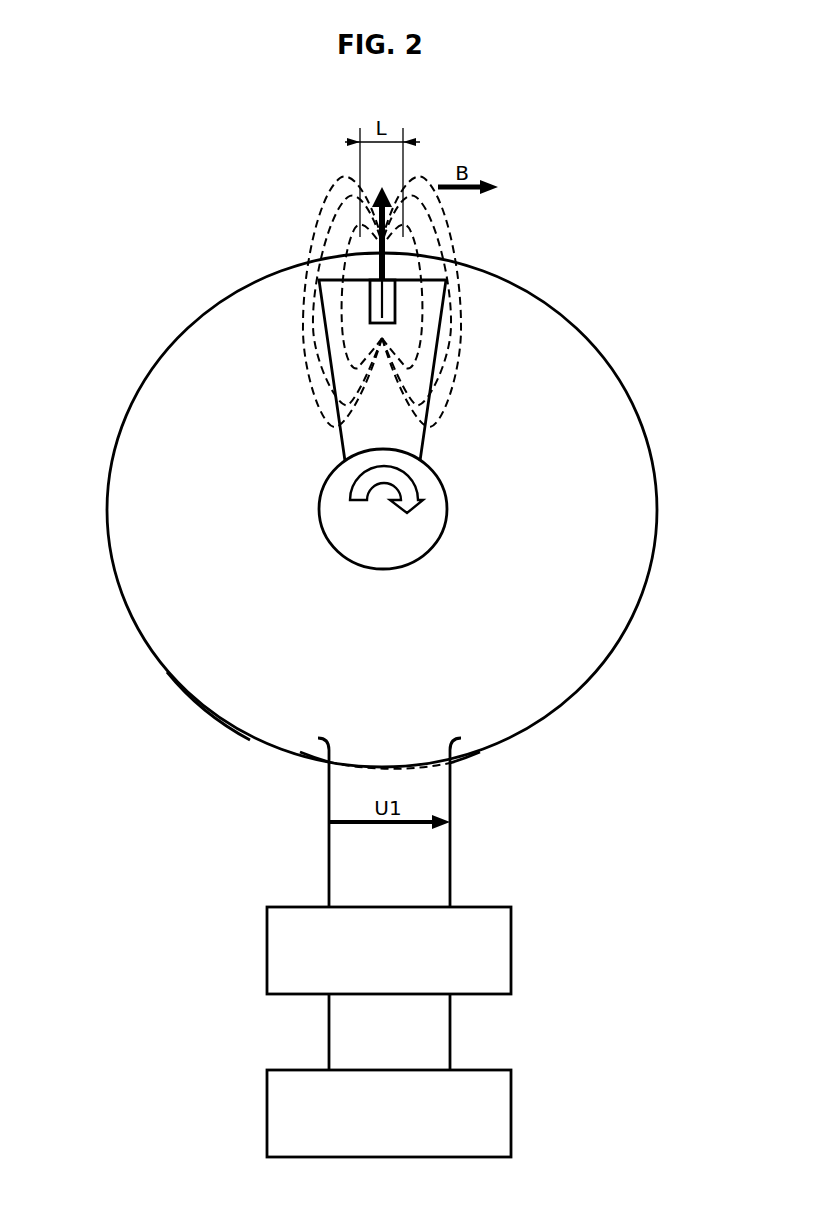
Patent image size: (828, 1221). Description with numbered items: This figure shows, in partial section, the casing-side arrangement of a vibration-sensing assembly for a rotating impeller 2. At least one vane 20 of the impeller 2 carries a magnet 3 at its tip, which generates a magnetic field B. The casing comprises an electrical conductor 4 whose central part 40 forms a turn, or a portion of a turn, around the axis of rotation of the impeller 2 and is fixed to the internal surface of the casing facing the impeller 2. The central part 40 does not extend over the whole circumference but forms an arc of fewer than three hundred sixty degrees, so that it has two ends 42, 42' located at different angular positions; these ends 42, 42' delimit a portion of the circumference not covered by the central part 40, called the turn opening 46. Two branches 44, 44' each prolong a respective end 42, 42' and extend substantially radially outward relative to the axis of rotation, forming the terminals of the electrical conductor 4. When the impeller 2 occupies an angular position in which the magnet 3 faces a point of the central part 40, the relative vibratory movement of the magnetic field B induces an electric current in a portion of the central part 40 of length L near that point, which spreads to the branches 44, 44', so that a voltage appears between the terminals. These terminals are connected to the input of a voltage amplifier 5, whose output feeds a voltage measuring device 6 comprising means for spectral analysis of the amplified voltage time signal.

The impeller 2 is at (447, 517).
The magnet 3 is at (368, 302).
The electrical conductor 4 is at (107, 509).
The voltage amplifier 5 is at (389, 950).
The voltage measuring device 6 is at (389, 1075).
The vane 20 is at (428, 441).
The central part 40 is at (167, 672).
The end 42 is at (264, 747).
The end 42' is at (517, 747).
The branch 44 is at (286, 822).
The branch 44' is at (498, 822).
The turn opening 46 is at (384, 765).